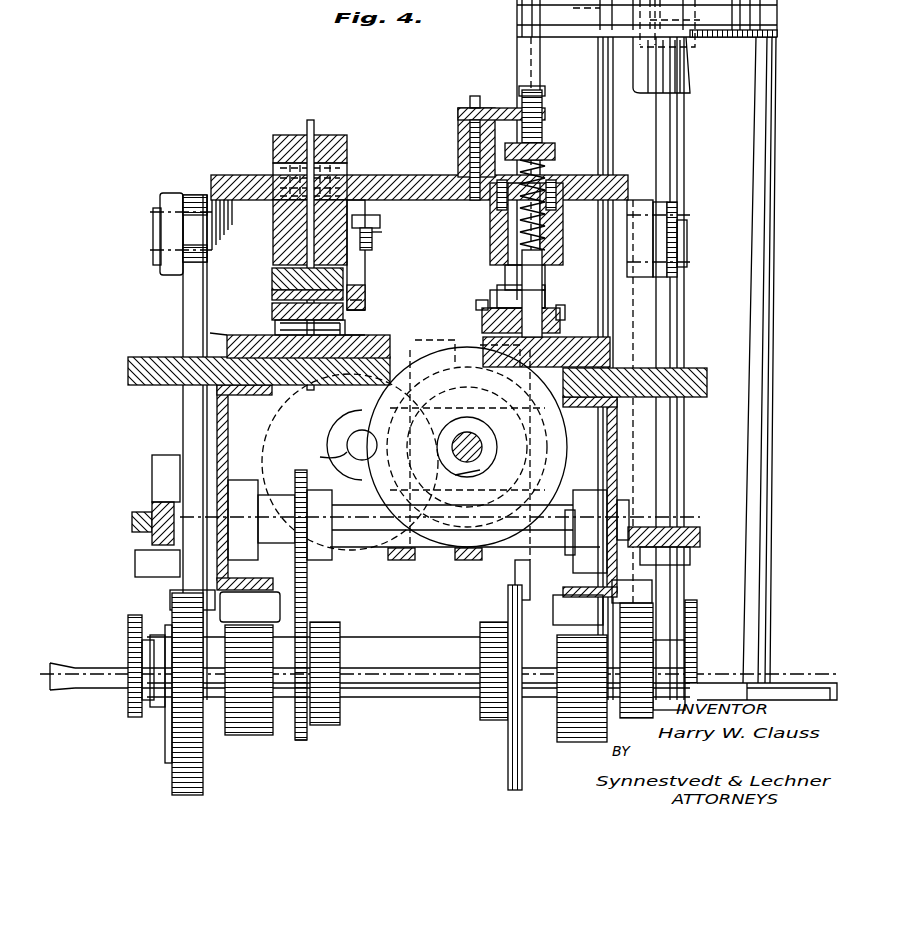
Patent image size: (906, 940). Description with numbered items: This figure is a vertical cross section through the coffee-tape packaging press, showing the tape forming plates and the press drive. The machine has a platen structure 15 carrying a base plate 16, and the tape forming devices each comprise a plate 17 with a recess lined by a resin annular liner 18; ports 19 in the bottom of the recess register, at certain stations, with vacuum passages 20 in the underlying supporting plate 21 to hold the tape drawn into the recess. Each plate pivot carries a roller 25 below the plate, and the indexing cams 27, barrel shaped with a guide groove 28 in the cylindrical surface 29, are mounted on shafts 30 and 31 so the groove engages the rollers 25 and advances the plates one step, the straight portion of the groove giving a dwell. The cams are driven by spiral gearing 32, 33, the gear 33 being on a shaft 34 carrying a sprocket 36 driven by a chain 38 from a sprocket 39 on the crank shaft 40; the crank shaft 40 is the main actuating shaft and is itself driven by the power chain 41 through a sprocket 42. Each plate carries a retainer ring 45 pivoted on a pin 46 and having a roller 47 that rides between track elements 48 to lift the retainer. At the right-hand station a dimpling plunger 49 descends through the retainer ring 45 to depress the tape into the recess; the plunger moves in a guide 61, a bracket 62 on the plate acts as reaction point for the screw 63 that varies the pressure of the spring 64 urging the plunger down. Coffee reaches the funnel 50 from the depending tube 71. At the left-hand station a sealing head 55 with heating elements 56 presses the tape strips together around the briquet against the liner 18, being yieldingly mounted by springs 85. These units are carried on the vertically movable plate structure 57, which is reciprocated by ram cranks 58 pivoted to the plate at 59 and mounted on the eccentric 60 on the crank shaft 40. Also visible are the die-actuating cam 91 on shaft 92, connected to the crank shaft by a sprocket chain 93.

The platen structure 15 is at (217, 400).
The base plate 16 is at (128, 370).
The plate 17 is at (275, 327).
The annular liner 18 is at (272, 312).
The ports 19 is at (360, 332).
The vacuum passages 20 is at (240, 344).
The supporting plate 21 is at (227, 336).
The roller 25 is at (395, 340).
The indexing cam 27 is at (440, 555).
The guide groove 28 is at (560, 416).
The cylindrical surface 29 is at (567, 450).
The shaft 30 is at (497, 447).
The shaft 31 is at (347, 442).
The spiral gear 32 is at (320, 457).
The spiral gear 33 is at (395, 562).
The shaft 34 is at (545, 548).
The sprocket 36 is at (307, 483).
The chain 38 is at (295, 572).
The sprocket 39 is at (297, 735).
The crank shaft 40 is at (398, 692).
The power chain 41 is at (508, 763).
The sprocket 42 is at (495, 722).
The retainer ring 45 is at (365, 295).
The pin 46 is at (365, 310).
The roller 47 is at (380, 232).
The track elements 48 is at (380, 218).
The dimpling plunger 49 is at (500, 302).
The funnel 50 is at (490, 230).
The sealing head 55 is at (272, 290).
The heating elements 56 is at (272, 298).
The vertically movable plate structure 57 is at (400, 175).
The ram crank 58 is at (183, 429).
The pivot 59 is at (150, 220).
The eccentric 60 is at (165, 730).
The guide 61 is at (490, 214).
The bracket 62 is at (498, 108).
The screw 63 is at (542, 130).
The spring 64 is at (545, 172).
The tube 71 is at (517, 33).
The springs 85 is at (273, 160).
The cam 91 is at (518, 572).
The shaft 92 is at (545, 598).
The sprocket chain 93 is at (698, 635).